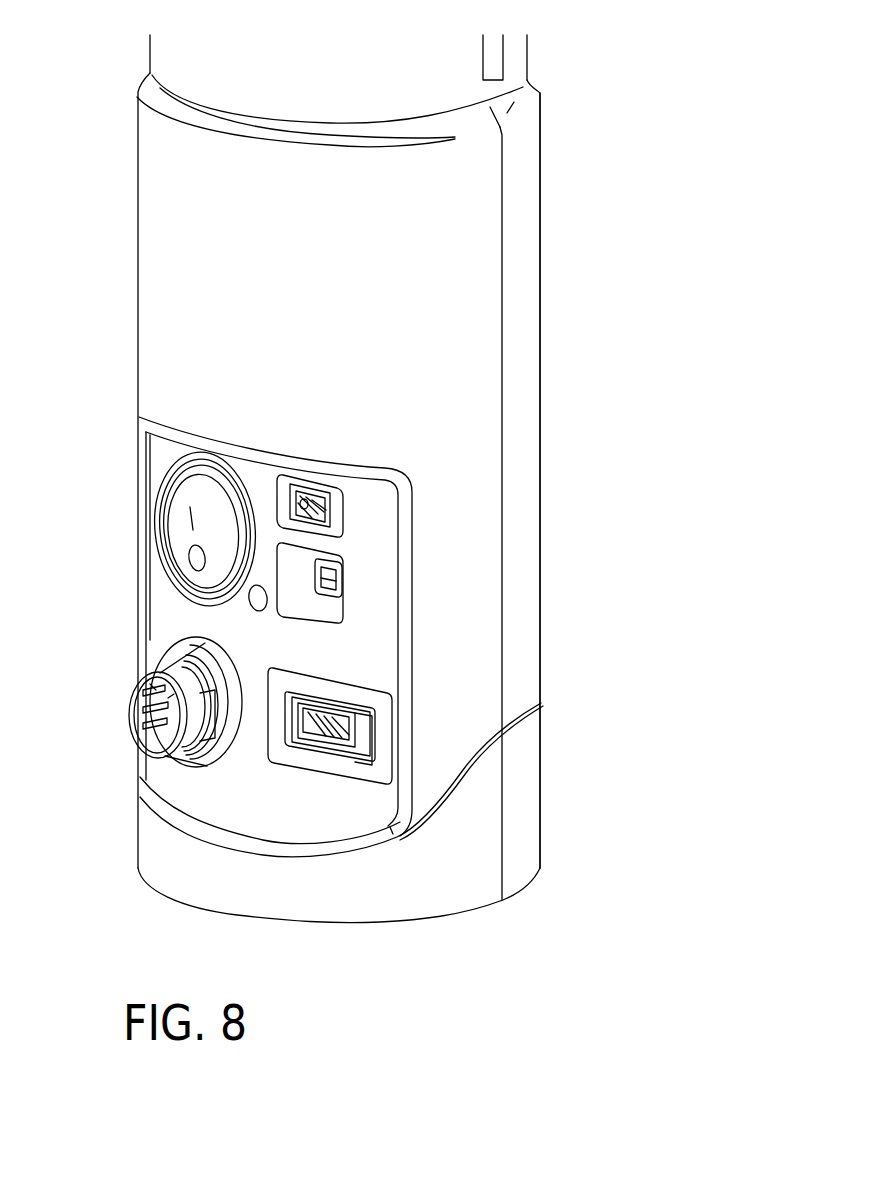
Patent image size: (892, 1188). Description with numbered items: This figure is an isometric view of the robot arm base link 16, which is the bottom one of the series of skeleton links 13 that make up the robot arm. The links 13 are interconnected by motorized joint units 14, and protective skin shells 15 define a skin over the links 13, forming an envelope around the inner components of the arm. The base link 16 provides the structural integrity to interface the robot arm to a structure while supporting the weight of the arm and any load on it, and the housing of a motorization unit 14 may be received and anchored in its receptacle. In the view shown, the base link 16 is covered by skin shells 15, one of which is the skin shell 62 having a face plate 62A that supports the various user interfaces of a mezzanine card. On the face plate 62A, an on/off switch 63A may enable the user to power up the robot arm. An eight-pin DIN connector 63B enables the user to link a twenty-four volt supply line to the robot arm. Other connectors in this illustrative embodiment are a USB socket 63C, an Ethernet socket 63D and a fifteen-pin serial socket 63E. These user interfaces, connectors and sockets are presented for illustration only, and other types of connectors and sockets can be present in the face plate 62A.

The skeleton link 13 is at (522, 17).
The motorized joint unit 14 is at (461, 132).
The protective skin shell 15 is at (542, 334).
The robot arm base link 16 is at (597, 421).
The skin shell 62 is at (348, 362).
The face plate 62A is at (280, 797).
The on/off switch 63A is at (180, 542).
The 8-pin DIN connector 63B is at (150, 743).
The USB socket 63C is at (343, 512).
The Ethernet socket 63D is at (330, 600).
The 15-pin serial socket 63E is at (345, 752).